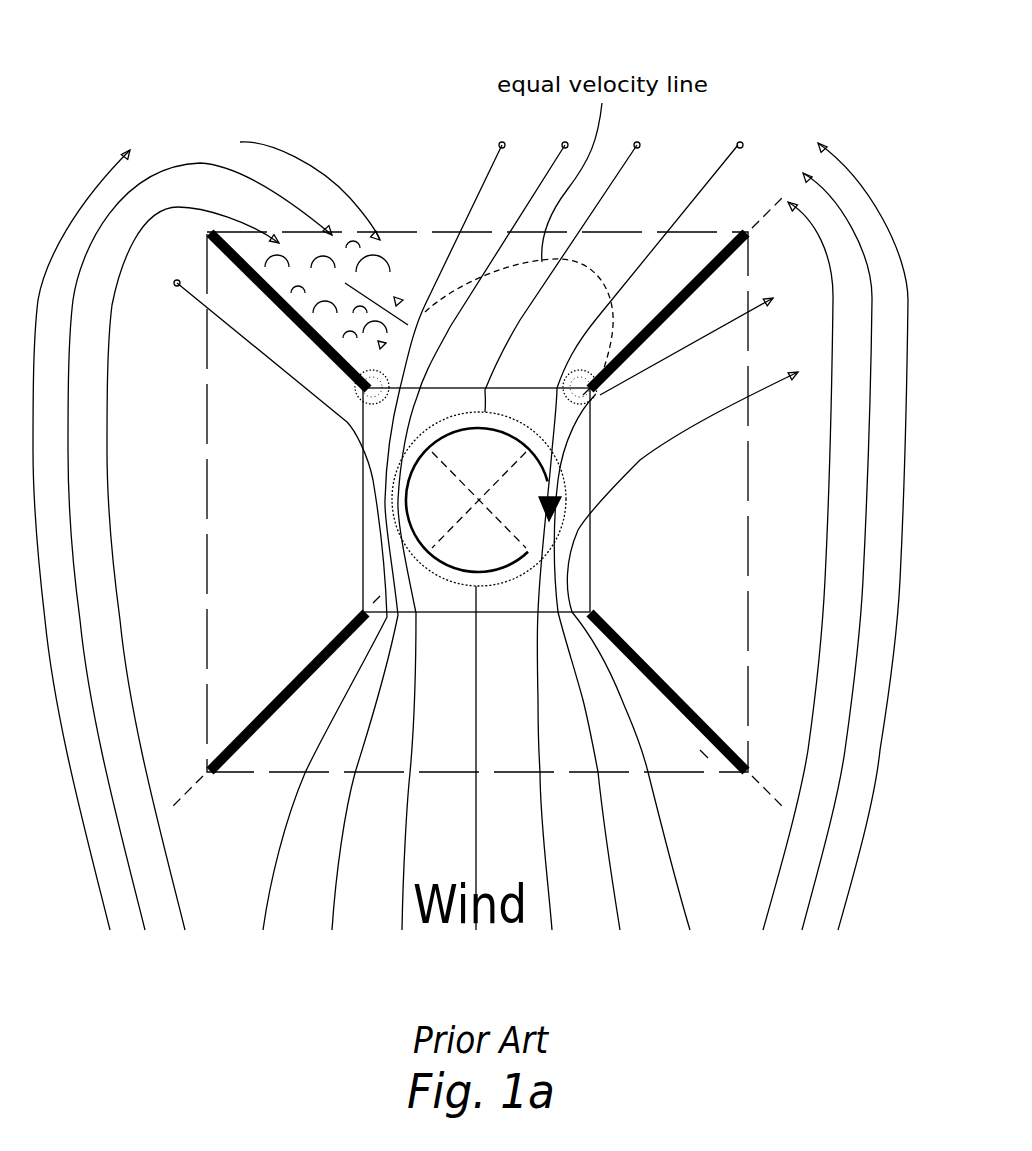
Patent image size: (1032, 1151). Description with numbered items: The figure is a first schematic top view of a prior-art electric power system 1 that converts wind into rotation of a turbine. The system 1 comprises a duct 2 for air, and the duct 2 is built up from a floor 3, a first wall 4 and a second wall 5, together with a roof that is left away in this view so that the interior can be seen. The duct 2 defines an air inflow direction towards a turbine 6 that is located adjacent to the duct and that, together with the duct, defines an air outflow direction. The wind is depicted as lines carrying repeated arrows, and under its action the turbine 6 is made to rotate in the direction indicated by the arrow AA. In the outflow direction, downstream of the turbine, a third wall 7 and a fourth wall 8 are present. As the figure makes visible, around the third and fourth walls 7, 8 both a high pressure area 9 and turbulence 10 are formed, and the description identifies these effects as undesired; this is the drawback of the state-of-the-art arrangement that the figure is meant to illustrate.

The electric power system 1 is at (192, 83).
The duct 2 is at (455, 741).
The floor 3 is at (680, 750).
The first wall 4 is at (292, 686).
The second wall 5 is at (662, 684).
The turbine 6 is at (482, 553).
The third wall 7 is at (663, 323).
The fourth wall 8 is at (292, 322).
The high pressure area 9 is at (370, 403).
The turbulence 10 is at (390, 278).
The direction of rotation arrow AA is at (478, 432).